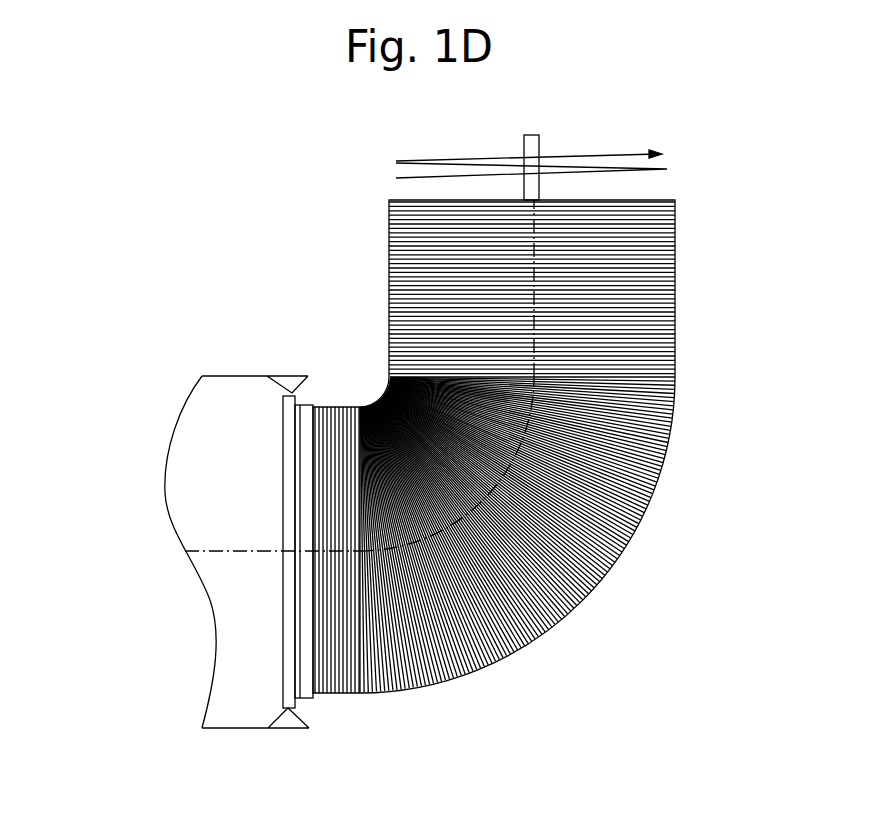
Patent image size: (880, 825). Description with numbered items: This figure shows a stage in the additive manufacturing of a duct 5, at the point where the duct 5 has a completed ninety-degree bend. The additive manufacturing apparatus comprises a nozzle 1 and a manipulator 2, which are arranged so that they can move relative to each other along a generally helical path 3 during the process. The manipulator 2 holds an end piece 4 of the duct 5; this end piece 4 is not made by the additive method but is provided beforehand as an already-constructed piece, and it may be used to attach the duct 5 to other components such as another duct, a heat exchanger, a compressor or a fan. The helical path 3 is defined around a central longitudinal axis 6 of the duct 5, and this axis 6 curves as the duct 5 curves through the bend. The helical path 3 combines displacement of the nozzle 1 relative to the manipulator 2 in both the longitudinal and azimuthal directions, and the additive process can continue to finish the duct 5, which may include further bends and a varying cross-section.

The nozzle 1 is at (523, 138).
The manipulator 2 is at (158, 512).
The helical path 3 is at (602, 155).
The end piece 4 is at (297, 703).
The duct 5 is at (627, 576).
The central longitudinal axis 6 is at (223, 553).